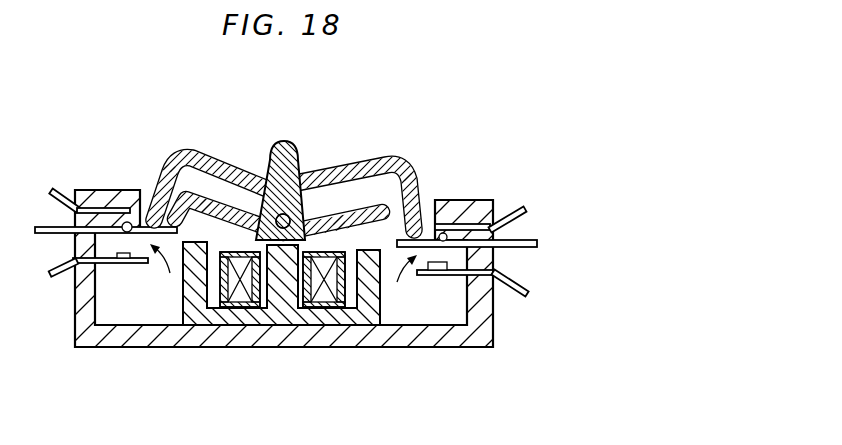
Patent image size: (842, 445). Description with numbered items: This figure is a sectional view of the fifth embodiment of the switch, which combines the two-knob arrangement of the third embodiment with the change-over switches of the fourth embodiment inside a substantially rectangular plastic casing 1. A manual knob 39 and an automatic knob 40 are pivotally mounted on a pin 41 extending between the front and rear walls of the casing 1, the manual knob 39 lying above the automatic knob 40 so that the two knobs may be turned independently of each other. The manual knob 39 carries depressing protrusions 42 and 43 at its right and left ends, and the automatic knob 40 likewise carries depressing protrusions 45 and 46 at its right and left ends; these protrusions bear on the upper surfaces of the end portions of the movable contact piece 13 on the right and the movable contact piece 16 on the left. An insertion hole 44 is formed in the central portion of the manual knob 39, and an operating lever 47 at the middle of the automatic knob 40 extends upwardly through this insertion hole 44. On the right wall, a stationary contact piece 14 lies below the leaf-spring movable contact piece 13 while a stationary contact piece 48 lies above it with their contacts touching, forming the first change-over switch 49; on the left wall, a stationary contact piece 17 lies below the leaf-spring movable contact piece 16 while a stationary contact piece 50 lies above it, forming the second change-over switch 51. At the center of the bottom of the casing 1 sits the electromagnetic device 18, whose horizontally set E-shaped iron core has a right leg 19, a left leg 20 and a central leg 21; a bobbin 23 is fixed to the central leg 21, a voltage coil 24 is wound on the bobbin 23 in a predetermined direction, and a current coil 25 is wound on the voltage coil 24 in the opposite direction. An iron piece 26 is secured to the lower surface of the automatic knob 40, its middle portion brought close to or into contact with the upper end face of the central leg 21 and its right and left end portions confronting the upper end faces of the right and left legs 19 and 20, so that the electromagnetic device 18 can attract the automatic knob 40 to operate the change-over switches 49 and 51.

The casing 1 is at (495, 320).
The movable contact piece 13 is at (440, 232).
The stationary contact piece 14 is at (445, 278).
The movable contact piece 16 is at (103, 207).
The stationary contact piece 17 is at (105, 268).
The electromagnetic device 18 is at (272, 331).
The right leg 19 is at (372, 318).
The left leg 20 is at (183, 310).
The central leg 21 is at (278, 218).
The bobbin 23 is at (236, 310).
The voltage coil 24 is at (318, 312).
The current coil 25 is at (340, 312).
The iron piece 26 is at (389, 160).
The manual knob 39 is at (370, 160).
The automatic knob 40 is at (205, 165).
The pin 41 is at (293, 159).
The depressing protrusion 42 is at (420, 178).
The depressing protrusion 43 is at (151, 175).
The insertion hole 44 is at (252, 162).
The depressing protrusion 45 is at (381, 230).
The depressing protrusion 46 is at (181, 218).
The operating lever 47 is at (285, 214).
The stationary contact piece 48 is at (472, 227).
The first change-over switch 49 is at (399, 280).
The stationary contact piece 50 is at (125, 210).
The second change-over switch 51 is at (163, 271).